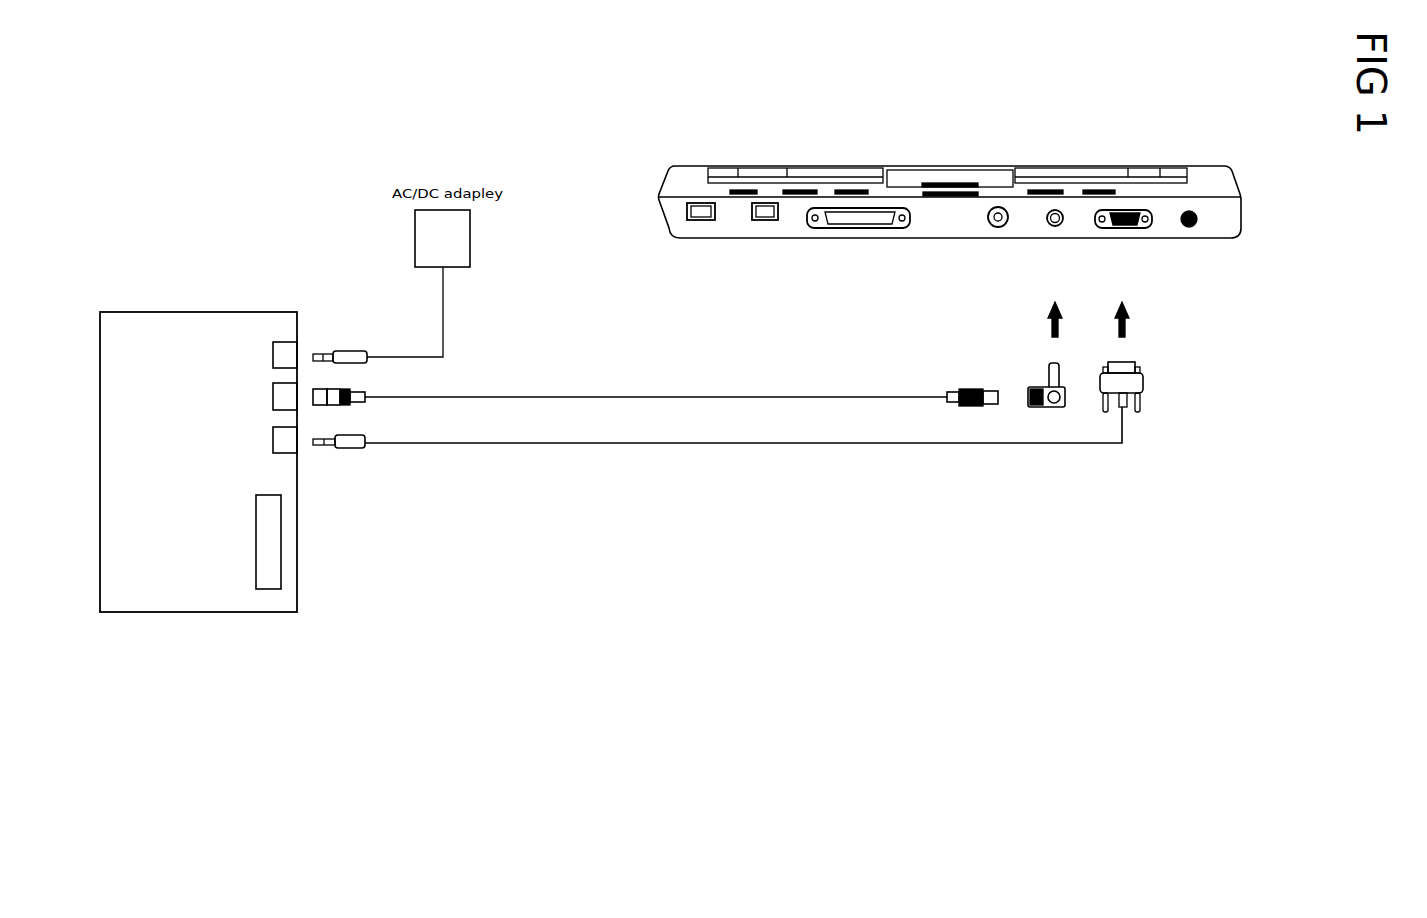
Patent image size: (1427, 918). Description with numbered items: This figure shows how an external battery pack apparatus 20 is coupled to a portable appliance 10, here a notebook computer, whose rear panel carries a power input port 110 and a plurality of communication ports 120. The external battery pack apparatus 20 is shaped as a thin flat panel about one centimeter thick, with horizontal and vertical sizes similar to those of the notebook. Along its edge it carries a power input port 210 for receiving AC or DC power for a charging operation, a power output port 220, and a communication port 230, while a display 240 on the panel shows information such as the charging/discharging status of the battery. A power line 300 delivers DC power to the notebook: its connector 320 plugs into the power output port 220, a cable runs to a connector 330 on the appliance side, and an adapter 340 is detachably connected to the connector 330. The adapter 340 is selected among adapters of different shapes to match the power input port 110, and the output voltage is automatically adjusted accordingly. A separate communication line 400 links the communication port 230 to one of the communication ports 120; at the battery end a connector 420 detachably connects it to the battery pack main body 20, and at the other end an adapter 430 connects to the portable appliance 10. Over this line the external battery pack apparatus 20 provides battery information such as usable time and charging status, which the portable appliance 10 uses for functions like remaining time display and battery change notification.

The portable appliance 10 is at (950, 170).
The power input port 110 is at (1055, 210).
The communication ports 120 is at (700, 203).
The external battery pack apparatus 20 is at (198, 330).
The power input port 210 is at (264, 355).
The power output port 220 is at (264, 397).
The communication port 230 is at (264, 440).
The display 240 is at (290, 543).
The power line 300 is at (777, 388).
The connector 320 is at (350, 384).
The connector 330 is at (967, 407).
The adapter 340 is at (1050, 385).
The communication line 400 is at (779, 455).
The connector 420 is at (352, 448).
The adapter 430 is at (1145, 378).